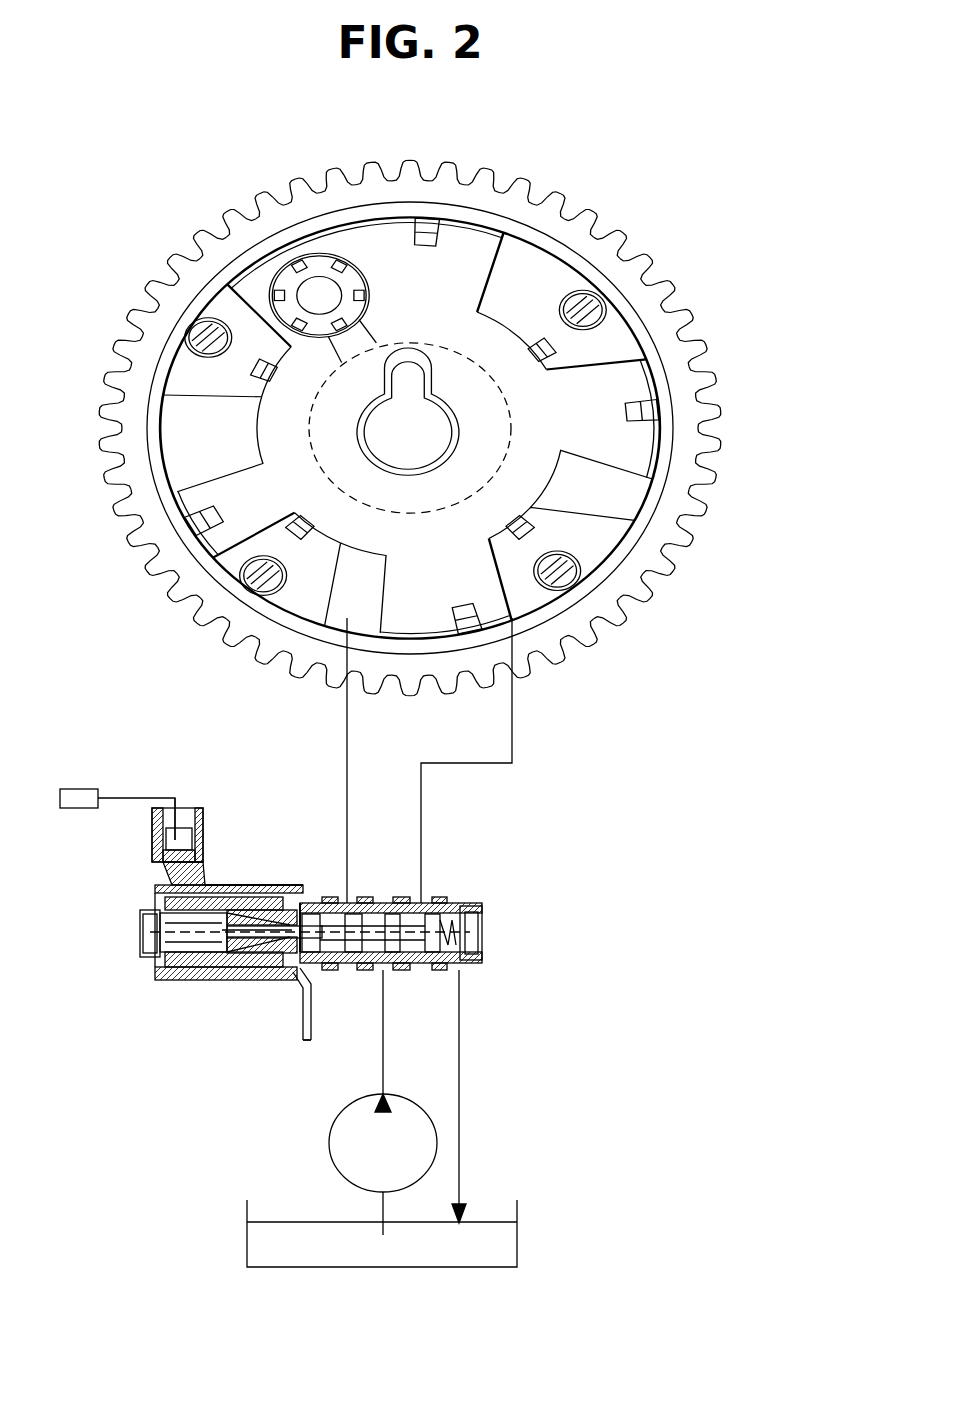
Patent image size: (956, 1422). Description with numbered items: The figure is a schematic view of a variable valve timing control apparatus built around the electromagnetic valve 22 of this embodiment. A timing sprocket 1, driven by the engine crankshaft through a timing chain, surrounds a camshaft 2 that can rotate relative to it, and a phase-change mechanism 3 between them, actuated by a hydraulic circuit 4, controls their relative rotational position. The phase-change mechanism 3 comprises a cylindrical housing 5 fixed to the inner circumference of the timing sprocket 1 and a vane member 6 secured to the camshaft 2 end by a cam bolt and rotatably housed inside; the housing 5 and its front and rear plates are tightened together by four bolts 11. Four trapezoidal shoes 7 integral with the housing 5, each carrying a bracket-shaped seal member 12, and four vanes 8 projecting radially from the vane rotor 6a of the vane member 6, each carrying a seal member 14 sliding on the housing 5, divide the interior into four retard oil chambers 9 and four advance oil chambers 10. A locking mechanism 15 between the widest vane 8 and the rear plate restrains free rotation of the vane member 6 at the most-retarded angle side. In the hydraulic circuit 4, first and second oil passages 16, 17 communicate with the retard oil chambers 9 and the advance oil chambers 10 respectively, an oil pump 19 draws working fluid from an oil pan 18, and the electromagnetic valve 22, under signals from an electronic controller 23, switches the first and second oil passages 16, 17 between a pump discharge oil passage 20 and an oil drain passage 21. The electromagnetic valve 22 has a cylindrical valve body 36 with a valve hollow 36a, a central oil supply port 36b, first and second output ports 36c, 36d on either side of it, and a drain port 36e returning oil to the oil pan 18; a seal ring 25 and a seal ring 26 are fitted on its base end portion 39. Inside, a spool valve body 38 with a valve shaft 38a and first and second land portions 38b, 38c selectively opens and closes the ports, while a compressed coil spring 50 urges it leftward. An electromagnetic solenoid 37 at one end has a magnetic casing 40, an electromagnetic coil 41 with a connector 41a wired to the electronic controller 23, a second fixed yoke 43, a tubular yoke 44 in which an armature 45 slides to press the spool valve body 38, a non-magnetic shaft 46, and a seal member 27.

The timing sprocket 1 is at (650, 270).
The camshaft 2 is at (482, 456).
The phase-change mechanism 3 is at (551, 228).
The hydraulic circuit 4 is at (316, 763).
The housing 5 is at (470, 222).
The vane member 6 is at (600, 512).
The vane rotor 6a is at (180, 447).
The shoe 7 is at (404, 451).
The vane 8 is at (372, 250).
The retard oil chamber 9 is at (510, 258).
The advance oil chamber 10 is at (250, 307).
The bolt 11 is at (590, 300).
The seal member 12 is at (274, 376).
The seal member 14 is at (428, 218).
The locking mechanism 15 is at (332, 246).
The first oil passage 16 is at (345, 724).
The second oil passage 17 is at (423, 793).
The oil pan 18 is at (518, 1245).
The oil pump 19 is at (330, 1144).
The pump discharge oil passage 20 is at (380, 1090).
The oil drain passage 21 is at (462, 1112).
The electromagnetic valve 22 is at (308, 926).
The electronic controller 23 is at (78, 789).
The seal ring 25 is at (322, 898).
The seal ring 26 is at (306, 1041).
The seal member 27 is at (278, 970).
The valve body 36 is at (350, 938).
The valve hollow 36a is at (396, 971).
The oil supply port 36b is at (368, 972).
The first output port 36c is at (416, 898).
The second output port 36d is at (340, 897).
The drain port 36e is at (448, 968).
The electromagnetic solenoid 37 is at (268, 876).
The spool valve body 38 is at (432, 926).
The valve shaft 38a is at (400, 955).
The first land portion 38b is at (360, 955).
The second land portion 38c is at (440, 955).
The base end portion 39 is at (312, 998).
The casing 40 is at (197, 926).
The electromagnetic coil 41 is at (216, 870).
The connector 41a is at (162, 870).
The second fixed yoke 43 is at (200, 905).
The tubular yoke 44 is at (252, 890).
The armature 45 is at (135, 942).
The shaft 46 is at (232, 958).
The compressed coil spring 50 is at (485, 932).